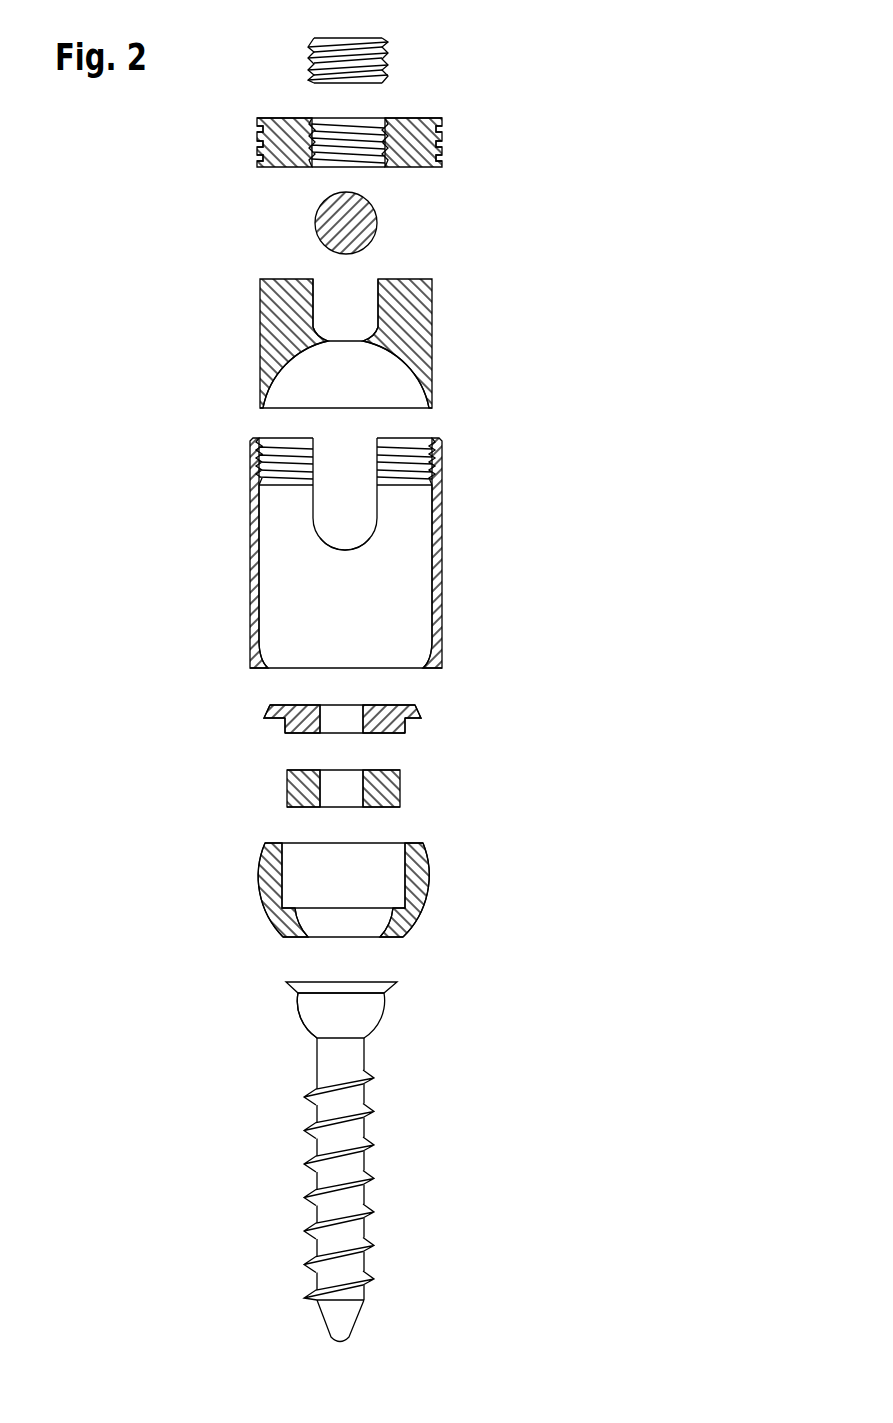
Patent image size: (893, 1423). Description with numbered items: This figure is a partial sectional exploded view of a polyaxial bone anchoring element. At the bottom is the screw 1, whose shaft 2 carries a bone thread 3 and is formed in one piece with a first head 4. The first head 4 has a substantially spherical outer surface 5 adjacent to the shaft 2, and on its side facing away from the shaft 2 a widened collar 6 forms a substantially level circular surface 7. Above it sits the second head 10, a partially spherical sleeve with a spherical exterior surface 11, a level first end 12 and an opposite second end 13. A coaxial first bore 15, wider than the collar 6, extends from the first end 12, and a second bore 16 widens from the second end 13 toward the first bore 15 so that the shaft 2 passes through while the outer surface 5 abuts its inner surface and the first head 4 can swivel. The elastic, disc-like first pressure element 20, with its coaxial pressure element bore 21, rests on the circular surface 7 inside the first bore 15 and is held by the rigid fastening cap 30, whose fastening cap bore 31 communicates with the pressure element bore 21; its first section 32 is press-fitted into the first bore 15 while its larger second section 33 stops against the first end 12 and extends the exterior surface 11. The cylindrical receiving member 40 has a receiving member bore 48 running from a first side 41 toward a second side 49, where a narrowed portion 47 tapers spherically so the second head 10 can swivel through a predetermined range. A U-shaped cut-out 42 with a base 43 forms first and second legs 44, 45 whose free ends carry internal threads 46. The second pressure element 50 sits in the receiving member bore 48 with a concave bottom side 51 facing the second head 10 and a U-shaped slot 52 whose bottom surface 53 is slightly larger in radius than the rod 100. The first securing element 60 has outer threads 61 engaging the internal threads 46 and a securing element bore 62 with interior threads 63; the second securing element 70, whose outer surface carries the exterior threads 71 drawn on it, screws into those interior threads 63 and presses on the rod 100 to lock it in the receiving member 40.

The screw 1 is at (369, 1152).
The shaft 2 is at (357, 1200).
The bone thread 3 is at (370, 1147).
The first head 4 is at (367, 1018).
The spherical outer surface 5 is at (300, 1025).
The collar 6 is at (300, 990).
The circular surface 7 is at (373, 982).
The second head 10 is at (354, 886).
The exterior surface 11 is at (258, 888).
The first end 12 is at (273, 844).
The second end 13 is at (293, 935).
The first bore 15 is at (365, 852).
The second bore 16 is at (352, 930).
The first pressure element 20 is at (388, 771).
The pressure element bore 21 is at (338, 778).
The fastening cap 30 is at (356, 723).
The fastening cap bore 31 is at (342, 714).
The first section 32 is at (282, 727).
The second section 33 is at (268, 712).
The receiving member 40 is at (371, 543).
The first side 41 is at (423, 434).
The cut-out 42 is at (347, 450).
The base 43 is at (343, 552).
The first leg 44 is at (403, 507).
The second leg 45 is at (277, 506).
The internal threads 46 is at (272, 460).
The narrowed portion 47 is at (417, 650).
The receiving member bore 48 is at (403, 597).
The second side 49 is at (262, 664).
The second pressure element 50 is at (346, 318).
The bottom side 51 is at (292, 386).
The slot 52 is at (358, 290).
The bottom surface 53 is at (348, 340).
The first securing element 60 is at (376, 144).
The outer threads 61 is at (440, 128).
The securing element bore 62 is at (328, 118).
The interior threads 63 is at (338, 152).
The second securing element 70 is at (389, 47).
The thread of set screw 71 is at (378, 67).
The rod 100 is at (362, 217).